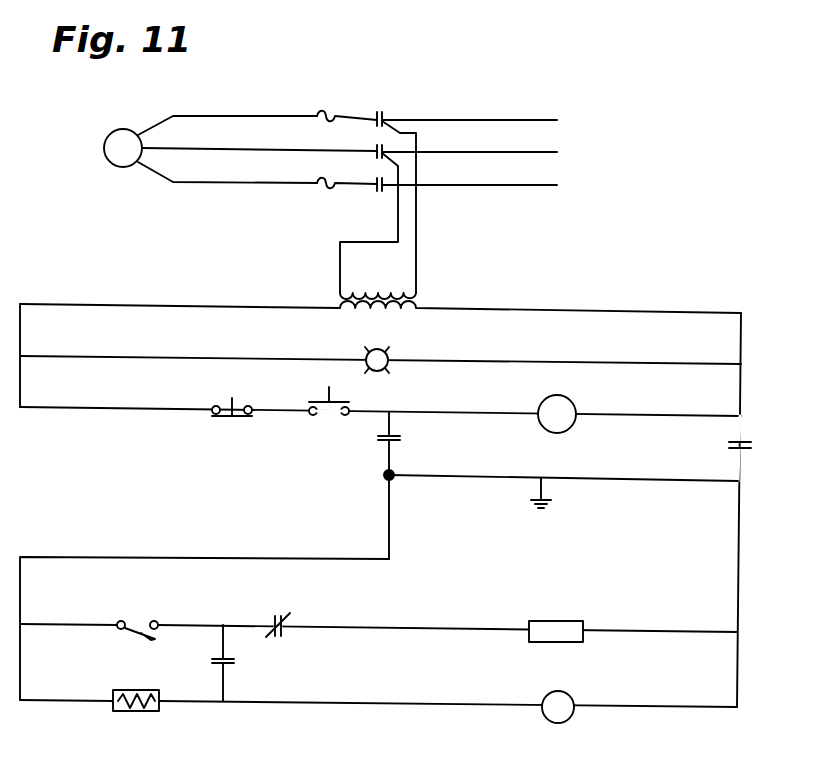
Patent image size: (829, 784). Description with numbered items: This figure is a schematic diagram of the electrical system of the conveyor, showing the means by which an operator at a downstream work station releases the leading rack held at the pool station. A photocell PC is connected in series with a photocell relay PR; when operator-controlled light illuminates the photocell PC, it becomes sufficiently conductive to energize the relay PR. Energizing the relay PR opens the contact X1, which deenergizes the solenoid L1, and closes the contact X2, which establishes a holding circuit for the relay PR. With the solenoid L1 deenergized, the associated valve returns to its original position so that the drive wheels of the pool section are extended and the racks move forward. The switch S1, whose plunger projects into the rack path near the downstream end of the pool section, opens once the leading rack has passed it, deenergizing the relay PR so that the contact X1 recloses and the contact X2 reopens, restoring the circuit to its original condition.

The switch S1 is at (125, 639).
The contact X1 is at (288, 610).
The contact X2 is at (232, 668).
The solenoid L1 is at (571, 619).
The photocell PC is at (137, 713).
The photocell relay PR is at (566, 721).